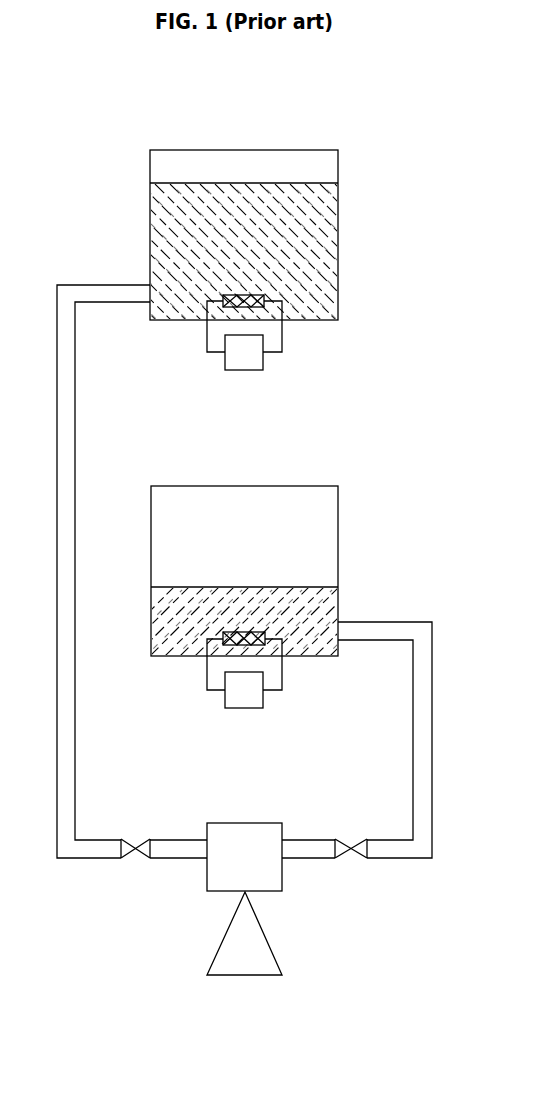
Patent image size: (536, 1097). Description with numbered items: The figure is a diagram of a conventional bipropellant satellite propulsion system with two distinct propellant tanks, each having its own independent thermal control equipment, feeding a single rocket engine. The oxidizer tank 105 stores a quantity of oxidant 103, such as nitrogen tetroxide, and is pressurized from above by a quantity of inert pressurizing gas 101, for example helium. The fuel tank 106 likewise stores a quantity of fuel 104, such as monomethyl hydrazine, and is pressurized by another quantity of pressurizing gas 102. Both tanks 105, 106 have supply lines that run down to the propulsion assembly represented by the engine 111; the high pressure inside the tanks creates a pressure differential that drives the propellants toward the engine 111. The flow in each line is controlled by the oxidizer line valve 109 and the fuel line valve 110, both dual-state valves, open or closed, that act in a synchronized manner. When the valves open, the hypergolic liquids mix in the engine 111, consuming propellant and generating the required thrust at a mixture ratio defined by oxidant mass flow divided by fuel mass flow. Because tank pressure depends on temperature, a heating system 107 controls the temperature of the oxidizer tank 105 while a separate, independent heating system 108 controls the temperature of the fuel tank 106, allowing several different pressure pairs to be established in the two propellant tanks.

The pressurizing gas 101 is at (244, 235).
The pressurizing gas 102 is at (244, 571).
The oxidant 103 is at (247, 256).
The fuel 104 is at (252, 623).
The oxidizer tank 105 is at (150, 270).
The fuel tank 106 is at (338, 613).
The heating system 107 is at (244, 332).
The heating system 108 is at (244, 670).
The oxidizer line valve 109 is at (137, 836).
The fuel line valve 110 is at (352, 838).
The engine 111 is at (220, 892).